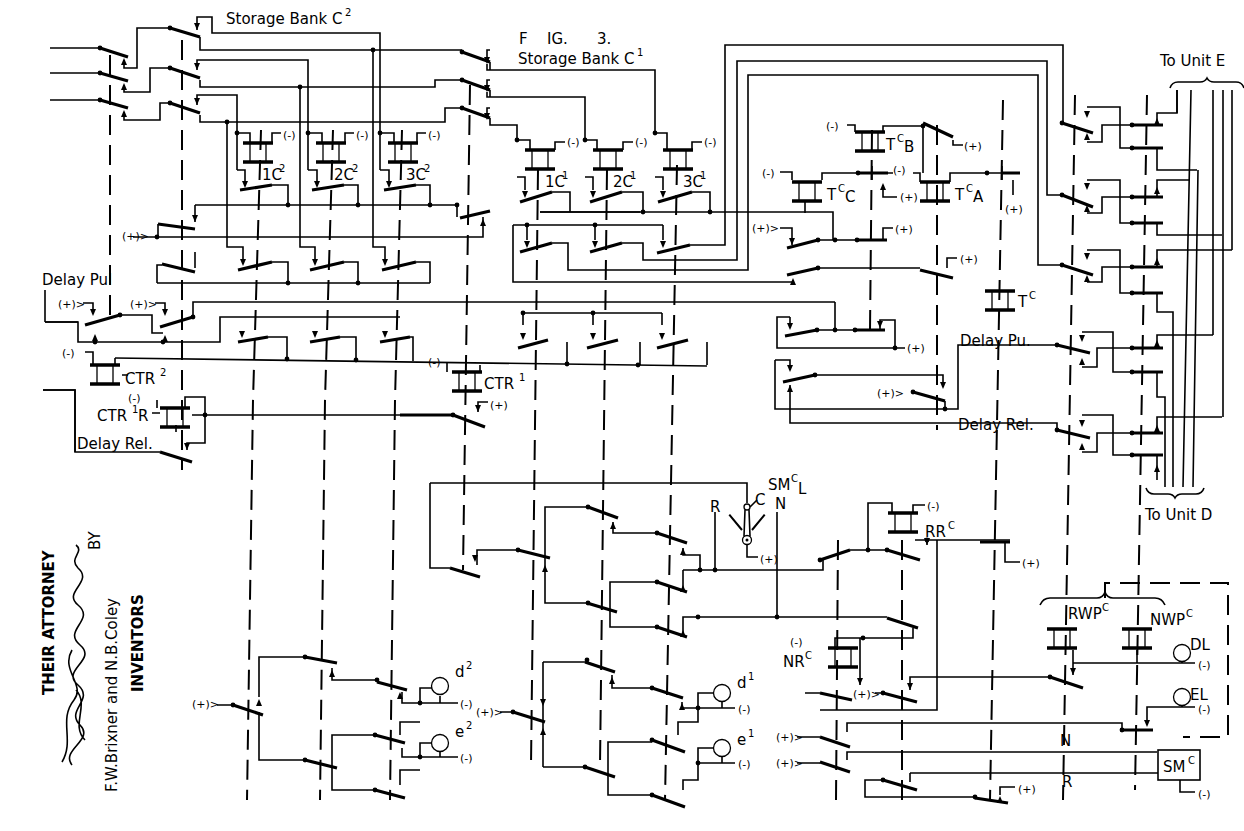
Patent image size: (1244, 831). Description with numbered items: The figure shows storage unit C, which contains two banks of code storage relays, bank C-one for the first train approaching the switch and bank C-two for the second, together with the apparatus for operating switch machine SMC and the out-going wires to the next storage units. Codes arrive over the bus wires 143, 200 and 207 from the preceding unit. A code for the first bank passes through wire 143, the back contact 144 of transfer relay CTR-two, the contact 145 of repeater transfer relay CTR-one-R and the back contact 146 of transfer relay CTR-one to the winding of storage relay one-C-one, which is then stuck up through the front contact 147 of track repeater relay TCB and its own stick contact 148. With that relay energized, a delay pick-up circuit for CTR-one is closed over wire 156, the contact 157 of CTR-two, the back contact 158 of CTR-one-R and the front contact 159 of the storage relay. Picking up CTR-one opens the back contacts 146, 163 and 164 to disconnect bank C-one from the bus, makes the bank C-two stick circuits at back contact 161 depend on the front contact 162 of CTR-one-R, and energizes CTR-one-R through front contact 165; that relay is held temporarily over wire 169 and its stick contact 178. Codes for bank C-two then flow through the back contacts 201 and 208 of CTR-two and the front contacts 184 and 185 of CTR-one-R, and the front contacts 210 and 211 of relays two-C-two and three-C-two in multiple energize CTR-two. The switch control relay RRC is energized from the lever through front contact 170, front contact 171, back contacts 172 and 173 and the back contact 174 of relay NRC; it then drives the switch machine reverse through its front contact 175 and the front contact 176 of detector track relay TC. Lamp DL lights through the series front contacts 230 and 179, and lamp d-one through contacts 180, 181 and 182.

The wire 207 is at (86, 48).
The back contact of transfer relay CTR2 208 is at (112, 40).
The wire 200 is at (86, 73).
The back contact of transfer relay CTR2 201 is at (104, 79).
The wire 143 is at (64, 101).
The back contact of transfer relay CTR2 144 is at (104, 108).
The front contact of repeater transfer relay CTR1R 185 is at (180, 26).
The front contact of repeater transfer relay CTR1R 184 is at (180, 66).
The back contact of repeater transfer relay CTR1R 145 is at (180, 101).
The back contact of transfer relay CTR1 164 is at (470, 50).
The back contact of transfer relay CTR1 163 is at (470, 78).
The back contact of transfer relay CTR1 146 is at (470, 106).
The front contact of repeater transfer relay CTR1R 162 is at (174, 218).
The back contact of transfer relay CTR1 161 is at (466, 214).
The stick contact of storage relay 1C1 148 is at (590, 210).
The front contact of track repeater relay TCB 147 is at (828, 244).
The wire 156 is at (60, 333).
The back contact of transfer relay CTR2 157 is at (116, 320).
The back contact of transfer repeater relay CTR1R 158 is at (185, 329).
The front contact of storage relay 2C2 210 is at (296, 337).
The front contact of storage relay 3C2 211 is at (370, 337).
The front contact of storage relay 1C1 159 is at (538, 340).
The wire 169 is at (59, 421).
The front contact of transfer relay CTR1 165 is at (462, 422).
The stick contact of relay CTR1R 178 is at (170, 458).
The front contact of transfer relay CTR1 170 is at (458, 574).
The front contact of storage relay 1C1 171 is at (522, 554).
The back contact of storage relay 2C1 172 is at (590, 512).
The back contact of storage relay 3C1 173 is at (661, 537).
The back contact of switch machine control relay NRC 174 is at (846, 556).
The front contact of relay 1C1 180 is at (525, 712).
The back contact of relay 2C1 181 is at (595, 667).
The back contact of relay 3C1 182 is at (660, 692).
The front contact of relay RRC 230 is at (898, 693).
The front contact of relay RWPC 179 is at (1063, 683).
The front contact of relay RRC 175 is at (914, 788).
The front contact of detector track relay TC 176 is at (983, 800).